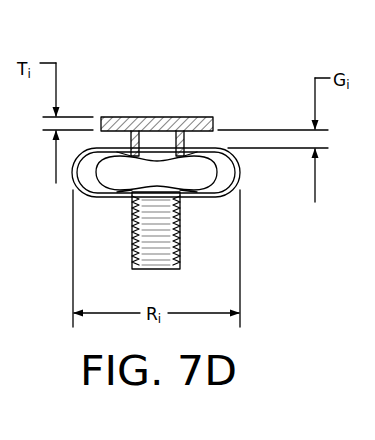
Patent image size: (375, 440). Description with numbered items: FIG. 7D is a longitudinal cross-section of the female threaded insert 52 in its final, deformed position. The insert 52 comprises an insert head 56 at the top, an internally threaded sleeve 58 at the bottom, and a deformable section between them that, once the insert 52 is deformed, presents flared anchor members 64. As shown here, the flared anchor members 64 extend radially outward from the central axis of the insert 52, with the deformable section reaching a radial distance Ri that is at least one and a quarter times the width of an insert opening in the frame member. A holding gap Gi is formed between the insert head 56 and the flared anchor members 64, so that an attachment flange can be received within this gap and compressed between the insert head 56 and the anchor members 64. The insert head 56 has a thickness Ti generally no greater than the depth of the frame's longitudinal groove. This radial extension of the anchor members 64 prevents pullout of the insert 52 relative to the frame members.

The female threaded insert 52 is at (246, 110).
The insert head 56 is at (128, 117).
The internally threaded sleeve 58 is at (182, 246).
The flared anchor members 64 is at (76, 177).